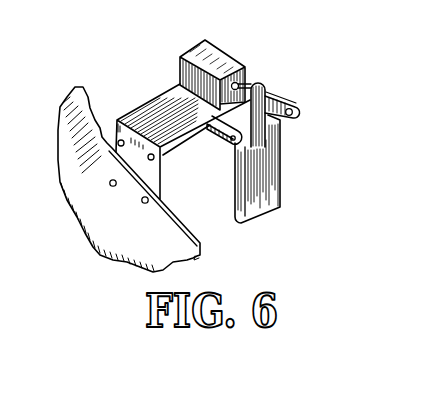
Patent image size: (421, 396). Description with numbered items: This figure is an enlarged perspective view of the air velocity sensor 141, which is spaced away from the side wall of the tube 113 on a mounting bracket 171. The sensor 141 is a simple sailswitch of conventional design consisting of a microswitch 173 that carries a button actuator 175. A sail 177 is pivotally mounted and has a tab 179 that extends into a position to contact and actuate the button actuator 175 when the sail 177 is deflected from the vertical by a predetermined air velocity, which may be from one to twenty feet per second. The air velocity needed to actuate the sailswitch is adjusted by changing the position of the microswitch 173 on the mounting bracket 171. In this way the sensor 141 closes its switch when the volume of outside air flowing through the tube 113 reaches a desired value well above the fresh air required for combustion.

The tube 113 is at (177, 206).
The air velocity sensor 141 is at (206, 116).
The mounting bracket 171 is at (162, 93).
The microswitch 173 is at (186, 47).
The button actuator 175 is at (250, 82).
The sail 177 is at (283, 187).
The tab 179 is at (268, 85).